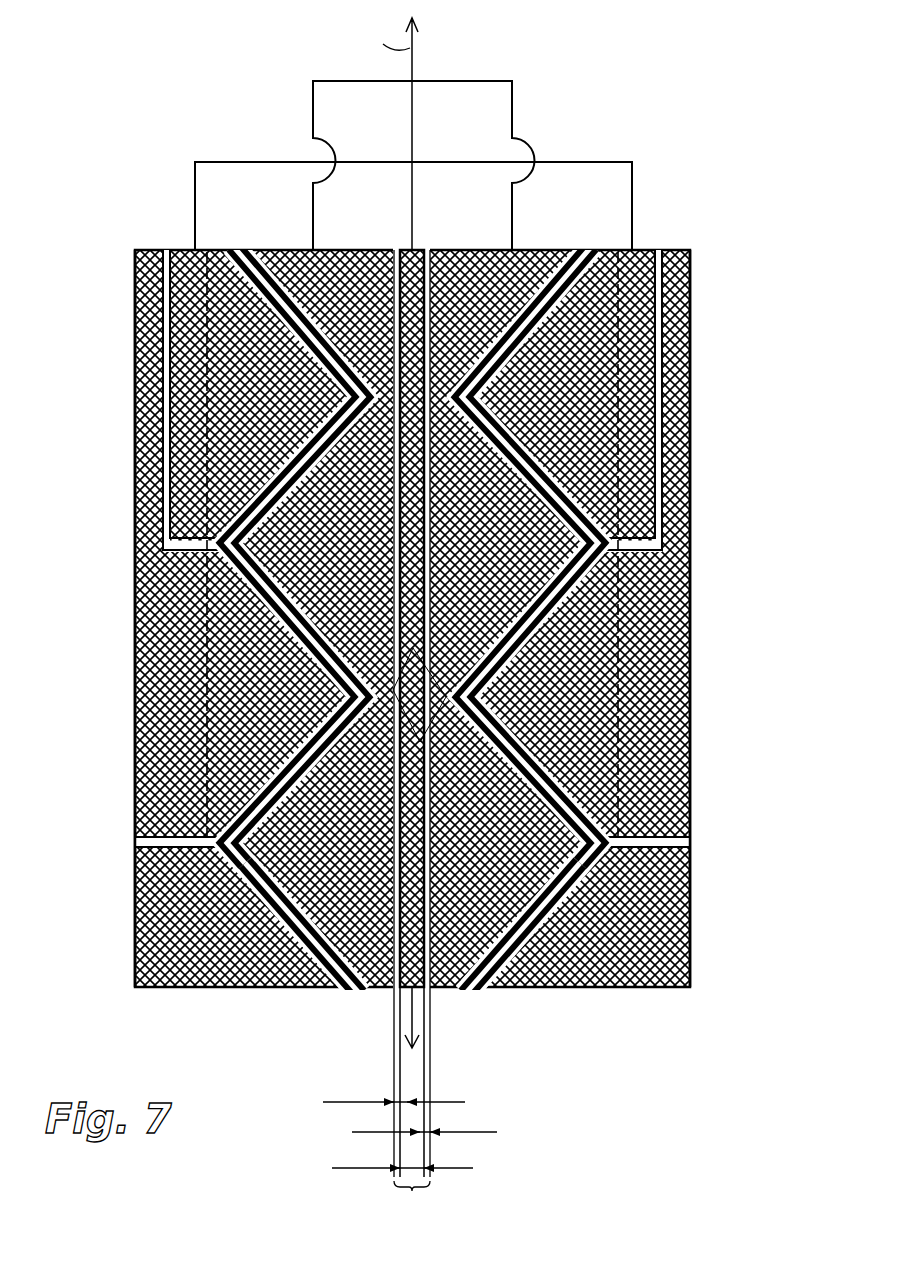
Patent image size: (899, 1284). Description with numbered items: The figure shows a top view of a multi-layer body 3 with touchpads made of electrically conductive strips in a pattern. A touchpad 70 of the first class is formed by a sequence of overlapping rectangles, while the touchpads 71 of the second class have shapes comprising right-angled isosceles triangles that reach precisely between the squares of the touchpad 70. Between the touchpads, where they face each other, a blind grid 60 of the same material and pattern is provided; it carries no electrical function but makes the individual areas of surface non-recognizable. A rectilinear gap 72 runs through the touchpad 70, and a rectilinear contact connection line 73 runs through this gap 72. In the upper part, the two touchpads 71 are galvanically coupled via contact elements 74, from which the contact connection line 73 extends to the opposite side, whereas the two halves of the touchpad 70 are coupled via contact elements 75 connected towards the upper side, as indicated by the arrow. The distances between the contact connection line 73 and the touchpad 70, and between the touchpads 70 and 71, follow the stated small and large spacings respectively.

The electrode arrangement 3 is at (787, 131).
The blind grid 60 is at (250, 583).
The touchpad of the first class 70 is at (327, 953).
The touchpad of the second class 71 is at (205, 366).
The gap 72 is at (410, 737).
The contact connection line 73 is at (385, 957).
The contact element 74 is at (600, 162).
The contact element 75 is at (498, 81).